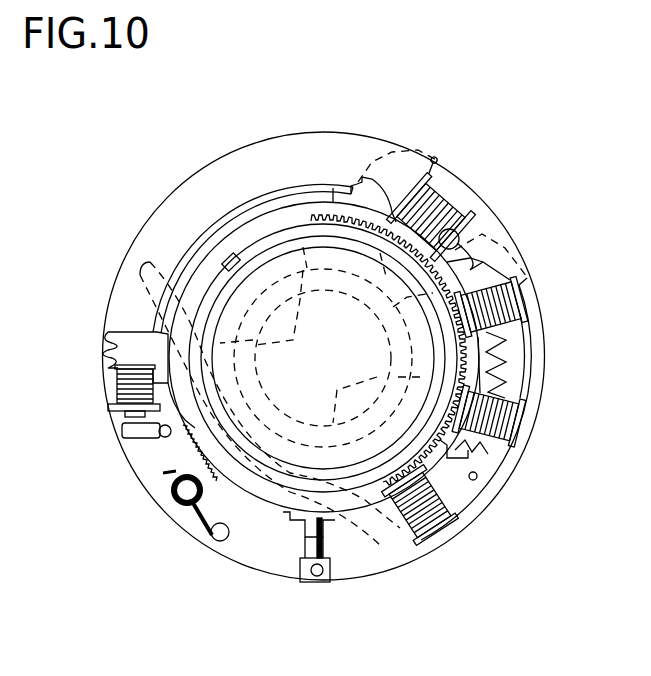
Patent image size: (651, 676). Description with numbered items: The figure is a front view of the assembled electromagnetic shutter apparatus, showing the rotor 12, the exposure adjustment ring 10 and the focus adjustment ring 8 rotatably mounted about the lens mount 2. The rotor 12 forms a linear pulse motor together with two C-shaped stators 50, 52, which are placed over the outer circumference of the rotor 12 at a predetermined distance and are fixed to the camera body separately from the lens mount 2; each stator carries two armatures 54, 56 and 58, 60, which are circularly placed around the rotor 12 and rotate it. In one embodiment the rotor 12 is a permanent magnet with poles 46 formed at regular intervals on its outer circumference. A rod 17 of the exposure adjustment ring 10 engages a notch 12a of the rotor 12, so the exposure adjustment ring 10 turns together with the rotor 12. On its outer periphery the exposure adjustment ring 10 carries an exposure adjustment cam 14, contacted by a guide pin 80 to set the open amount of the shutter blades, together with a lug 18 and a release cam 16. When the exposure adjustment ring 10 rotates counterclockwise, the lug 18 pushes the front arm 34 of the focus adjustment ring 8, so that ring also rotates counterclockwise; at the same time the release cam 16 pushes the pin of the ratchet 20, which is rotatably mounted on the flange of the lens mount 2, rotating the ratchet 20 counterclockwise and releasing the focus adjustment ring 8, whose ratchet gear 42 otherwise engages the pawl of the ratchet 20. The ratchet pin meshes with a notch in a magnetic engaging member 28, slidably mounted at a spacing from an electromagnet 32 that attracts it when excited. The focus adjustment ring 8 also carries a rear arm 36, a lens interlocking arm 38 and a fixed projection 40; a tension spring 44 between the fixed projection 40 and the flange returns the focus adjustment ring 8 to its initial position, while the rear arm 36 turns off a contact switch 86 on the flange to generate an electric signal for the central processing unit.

The lens mount 2 is at (352, 581).
The focus adjustment ring 8 is at (178, 255).
The exposure adjustment ring 10 is at (275, 210).
The rotor 12 is at (434, 472).
The notch 12a is at (229, 256).
The exposure adjustment cam 14 is at (383, 170).
The release cam 16 is at (108, 407).
The rod 17 is at (183, 258).
The lug 18 is at (360, 180).
The ratchet 20 is at (157, 444).
The engaging member 28 is at (122, 432).
The electromagnet 32 is at (117, 380).
The front arm 34 is at (340, 187).
The rear arm 36 is at (290, 521).
The lens interlocking arm 38 is at (110, 340).
The fixed projection 40 is at (508, 292).
The ratchet gear 42 is at (165, 470).
The tension spring 44 is at (508, 370).
The poles 46 is at (448, 504).
The stator 50 is at (500, 243).
The stator 52 is at (494, 486).
The armature 54 is at (445, 225).
The armature 56 is at (526, 306).
The armature 58 is at (512, 425).
The armature 60 is at (442, 533).
The guide pin 80 is at (462, 238).
The contact switch 86 is at (318, 584).